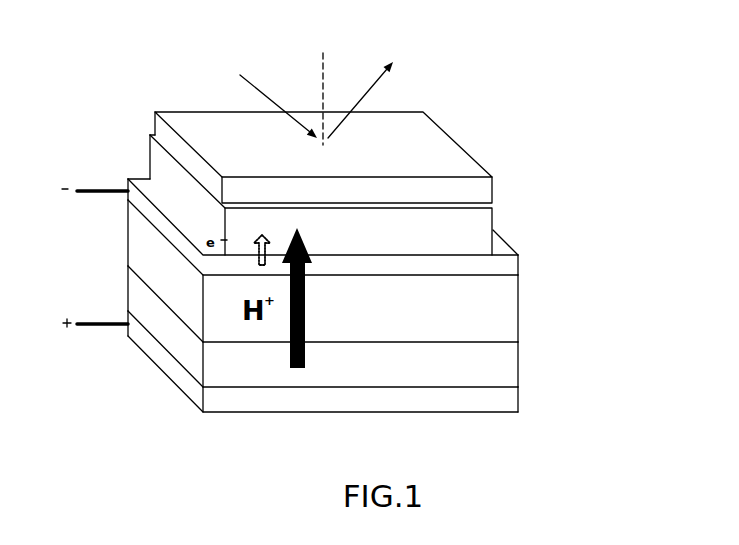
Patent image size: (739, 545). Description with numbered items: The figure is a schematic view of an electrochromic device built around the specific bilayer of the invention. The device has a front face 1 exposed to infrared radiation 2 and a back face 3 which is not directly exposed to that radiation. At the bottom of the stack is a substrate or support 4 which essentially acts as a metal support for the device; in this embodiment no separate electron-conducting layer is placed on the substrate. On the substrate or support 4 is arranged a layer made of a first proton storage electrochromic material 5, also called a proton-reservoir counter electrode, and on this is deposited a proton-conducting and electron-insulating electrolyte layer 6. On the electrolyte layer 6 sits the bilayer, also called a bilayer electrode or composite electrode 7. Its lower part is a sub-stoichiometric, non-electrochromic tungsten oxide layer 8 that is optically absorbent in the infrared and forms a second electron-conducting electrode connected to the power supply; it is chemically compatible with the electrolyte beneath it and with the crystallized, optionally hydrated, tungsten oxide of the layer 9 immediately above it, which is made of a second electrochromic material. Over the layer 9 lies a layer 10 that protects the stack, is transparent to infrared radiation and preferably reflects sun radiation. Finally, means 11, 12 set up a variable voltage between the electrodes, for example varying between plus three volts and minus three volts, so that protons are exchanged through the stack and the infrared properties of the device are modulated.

The front face 1 is at (120, 95).
The infrared radiation 2 is at (273, 95).
The back face 3 is at (158, 420).
The substrate or support 4 is at (505, 397).
The first proton storage electrochromic material layer 5 is at (505, 370).
The proton-conducting and electron-insulating electrolyte layer 6 is at (505, 312).
The bilayer electrode or composite electrode 7 is at (542, 248).
The tungsten oxide layer 8 is at (505, 263).
The second electrochromic material layer 9 is at (487, 224).
The protective layer 10 is at (482, 186).
The means for setting up a variable voltage 11 is at (90, 191).
The means for setting up a variable voltage 12 is at (90, 324).